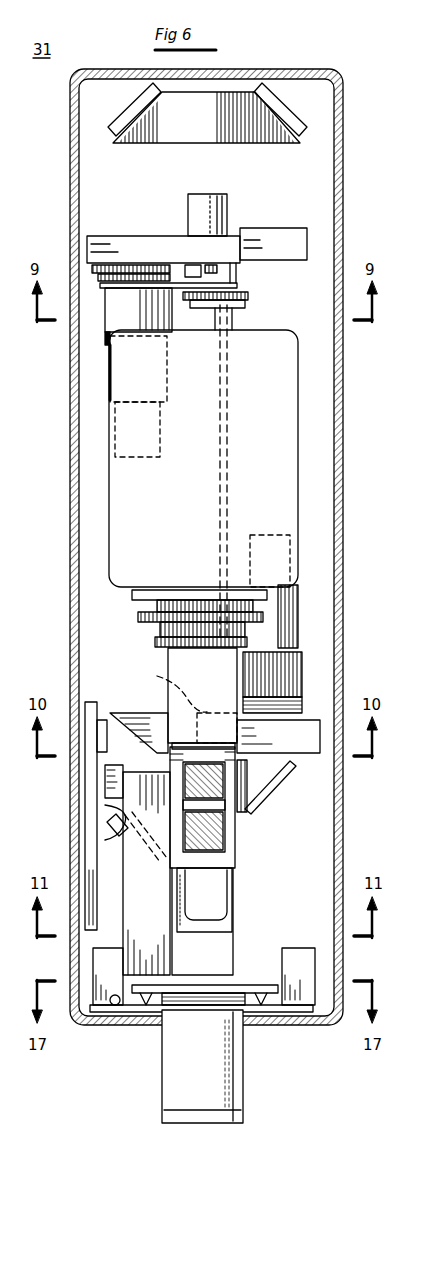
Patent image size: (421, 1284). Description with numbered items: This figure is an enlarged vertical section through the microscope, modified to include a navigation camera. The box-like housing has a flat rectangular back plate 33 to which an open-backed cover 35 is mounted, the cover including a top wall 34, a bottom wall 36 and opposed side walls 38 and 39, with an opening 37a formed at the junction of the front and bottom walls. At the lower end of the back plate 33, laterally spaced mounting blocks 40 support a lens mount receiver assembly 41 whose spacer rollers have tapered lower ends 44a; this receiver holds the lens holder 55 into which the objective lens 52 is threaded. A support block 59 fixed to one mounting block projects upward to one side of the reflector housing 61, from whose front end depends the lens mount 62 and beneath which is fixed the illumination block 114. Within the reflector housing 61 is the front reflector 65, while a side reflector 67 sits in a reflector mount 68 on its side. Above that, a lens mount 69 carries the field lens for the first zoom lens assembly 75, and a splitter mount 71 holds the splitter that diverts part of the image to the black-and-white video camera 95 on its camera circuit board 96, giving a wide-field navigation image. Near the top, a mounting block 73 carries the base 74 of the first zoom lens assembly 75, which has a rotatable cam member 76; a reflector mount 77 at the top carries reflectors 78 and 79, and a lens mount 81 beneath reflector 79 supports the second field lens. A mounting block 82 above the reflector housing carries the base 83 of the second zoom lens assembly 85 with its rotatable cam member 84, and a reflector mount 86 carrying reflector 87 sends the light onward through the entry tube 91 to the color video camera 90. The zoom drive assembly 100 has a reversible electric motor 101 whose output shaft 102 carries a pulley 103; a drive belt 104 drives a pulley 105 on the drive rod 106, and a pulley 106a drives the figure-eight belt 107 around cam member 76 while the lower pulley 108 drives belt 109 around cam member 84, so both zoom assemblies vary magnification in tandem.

The back plate 33 is at (338, 205).
The top wall 34 is at (308, 69).
The cover 35 is at (70, 166).
The bottom wall 36 is at (102, 1015).
The opening 37a is at (238, 1024).
The side wall 38 is at (340, 450).
The side wall 39 is at (77, 464).
The mounting blocks 40 is at (98, 992).
The lens mount receiver assembly 41 is at (230, 985).
The tapered lower ends 44a is at (272, 1017).
The objective lens 52 is at (248, 1094).
The lens holder 55 is at (193, 1002).
The support block 59 is at (157, 900).
The reflector housing 61 is at (235, 855).
The lens mount 62 is at (211, 920).
The front reflector 65 is at (223, 832).
The side reflector 67 is at (115, 838).
The reflector mount 68 is at (115, 806).
The lens mount 69 is at (105, 779).
The splitter mount 71 is at (147, 719).
The mounting block 73 is at (102, 240).
The base 74 is at (93, 268).
The first zoom lens assembly 75 is at (105, 342).
The rotatable cam member 76 is at (102, 317).
The reflector mount 77 is at (208, 138).
The reflector 78 is at (124, 110).
The reflector 79 is at (292, 107).
The lens mount 81 is at (272, 232).
The mounting block 82 is at (284, 784).
The base 83 is at (308, 718).
The rotatable cam member 84 is at (298, 661).
The second zoom lens assembly 85 is at (310, 608).
The reflector mount 86 is at (278, 784).
The reflector 87 is at (261, 798).
The color video camera 90 is at (120, 492).
The entry tube 91 is at (168, 656).
The black-and-white video camera 95 is at (98, 714).
The camera circuit board 96 is at (91, 822).
The zoom drive assembly 100 is at (243, 211).
The reversible electric motor 101 is at (216, 194).
The output shaft 102 is at (163, 249).
The pulley 103 is at (186, 310).
The drive belt 104 is at (250, 297).
The pulley 105 is at (242, 308).
The drive rod 106 is at (225, 430).
The pulley 106a is at (238, 267).
The belt 107 is at (133, 262).
The pulley 108 is at (178, 704).
The belt 109 is at (305, 704).
The illumination block 114 is at (183, 930).